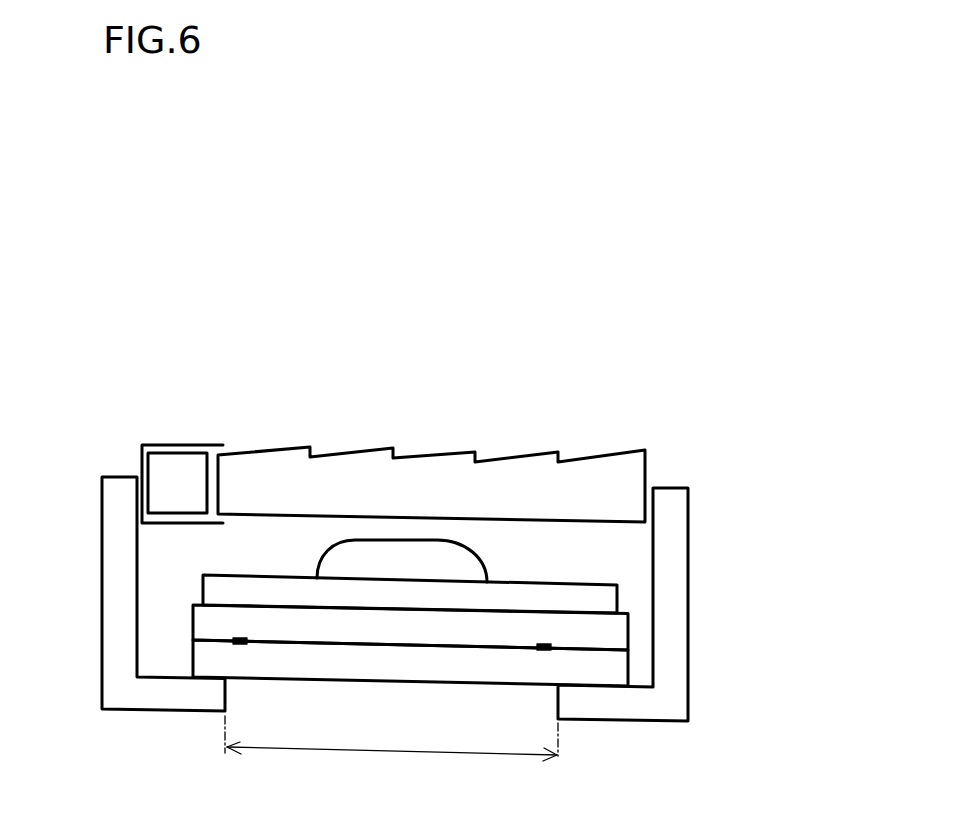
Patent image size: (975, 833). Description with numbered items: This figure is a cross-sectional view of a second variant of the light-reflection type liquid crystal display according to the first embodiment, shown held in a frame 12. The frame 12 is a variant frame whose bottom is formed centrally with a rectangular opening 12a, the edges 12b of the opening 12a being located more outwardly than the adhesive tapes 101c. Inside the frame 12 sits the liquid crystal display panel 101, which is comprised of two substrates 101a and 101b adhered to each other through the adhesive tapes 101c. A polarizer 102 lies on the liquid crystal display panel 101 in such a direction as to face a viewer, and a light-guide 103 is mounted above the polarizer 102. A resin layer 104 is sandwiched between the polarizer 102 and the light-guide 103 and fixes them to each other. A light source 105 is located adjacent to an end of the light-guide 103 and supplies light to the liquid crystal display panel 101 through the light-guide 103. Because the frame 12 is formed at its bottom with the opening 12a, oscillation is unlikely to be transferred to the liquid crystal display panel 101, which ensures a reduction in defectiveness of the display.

The frame 12 is at (102, 515).
The opening 12a is at (387, 752).
The opening edge 12b is at (228, 693).
The liquid crystal display panel 101 is at (538, 667).
The substrate 101a is at (630, 672).
The substrate 101b is at (630, 640).
The adhesive tapes 101c is at (242, 644).
The polarizer 102 is at (617, 598).
The light-guide 103 is at (323, 455).
The resin layer 104 is at (460, 577).
The light source 105 is at (178, 453).